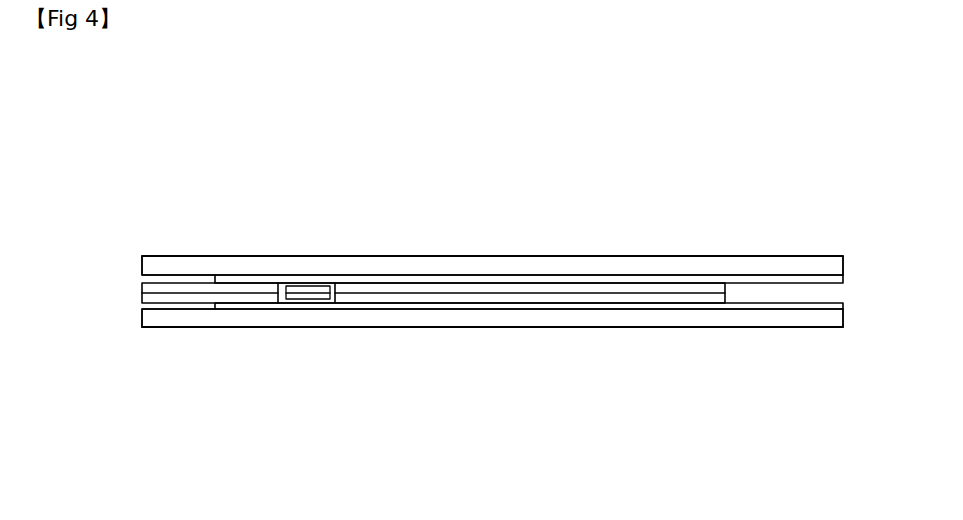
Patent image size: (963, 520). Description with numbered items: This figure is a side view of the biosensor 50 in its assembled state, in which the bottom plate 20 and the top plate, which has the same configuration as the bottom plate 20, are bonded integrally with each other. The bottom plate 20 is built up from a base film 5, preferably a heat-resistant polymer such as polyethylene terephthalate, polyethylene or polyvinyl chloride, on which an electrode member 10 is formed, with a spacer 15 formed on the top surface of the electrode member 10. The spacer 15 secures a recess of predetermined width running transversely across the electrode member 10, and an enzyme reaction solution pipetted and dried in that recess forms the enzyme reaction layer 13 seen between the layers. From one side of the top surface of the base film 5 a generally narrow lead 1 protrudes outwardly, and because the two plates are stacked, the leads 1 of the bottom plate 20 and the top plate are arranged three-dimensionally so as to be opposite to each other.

The biosensor 50 is at (128, 224).
The lead 1 is at (845, 315).
The base film 5 is at (655, 313).
The electrode member 10 is at (430, 308).
The spacer 15 is at (592, 285).
The enzyme reaction layer 13 is at (321, 297).
The bottom plate 20 is at (280, 327).